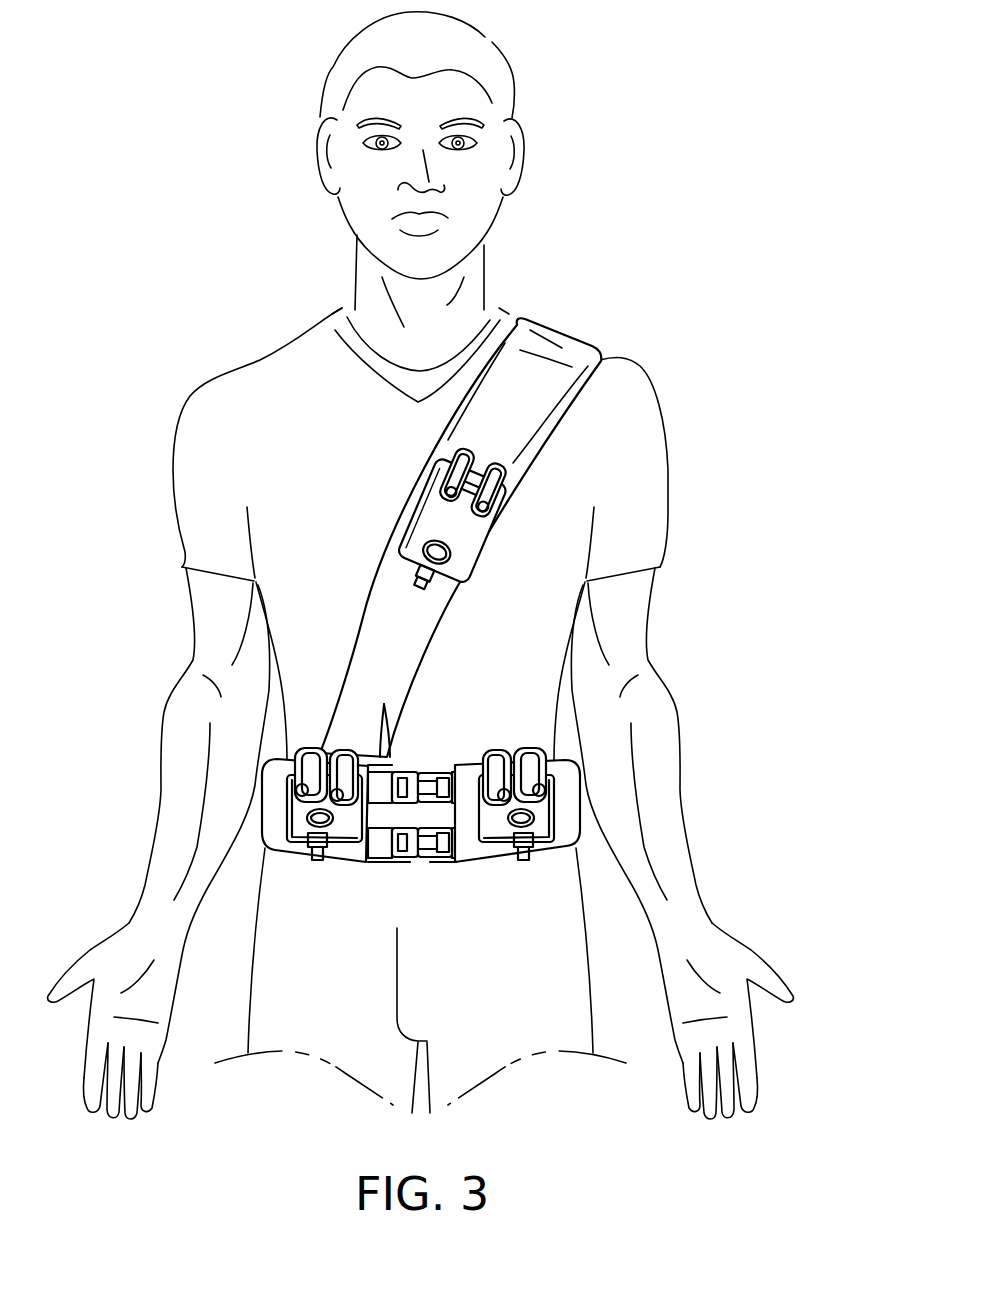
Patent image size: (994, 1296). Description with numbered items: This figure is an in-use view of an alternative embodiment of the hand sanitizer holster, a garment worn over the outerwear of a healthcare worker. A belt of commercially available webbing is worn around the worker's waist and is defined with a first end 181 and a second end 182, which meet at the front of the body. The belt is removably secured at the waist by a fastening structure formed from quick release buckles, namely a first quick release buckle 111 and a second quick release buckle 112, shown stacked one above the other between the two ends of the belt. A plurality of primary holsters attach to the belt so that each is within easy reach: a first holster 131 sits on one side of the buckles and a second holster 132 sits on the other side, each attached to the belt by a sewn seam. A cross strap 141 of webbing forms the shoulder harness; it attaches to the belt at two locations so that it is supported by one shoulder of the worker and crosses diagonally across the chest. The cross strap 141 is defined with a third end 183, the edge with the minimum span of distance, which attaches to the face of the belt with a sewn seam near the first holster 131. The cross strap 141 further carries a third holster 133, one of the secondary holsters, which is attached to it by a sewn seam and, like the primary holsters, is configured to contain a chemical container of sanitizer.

The cross strap 141 is at (540, 388).
The third holster 133 is at (478, 540).
The third end 183 is at (390, 755).
The first end 181 is at (364, 863).
The second end 182 is at (464, 860).
The first holster 131 is at (293, 835).
The second holster 132 is at (543, 812).
The first quick release buckle 111 is at (423, 770).
The second quick release buckle 112 is at (418, 860).